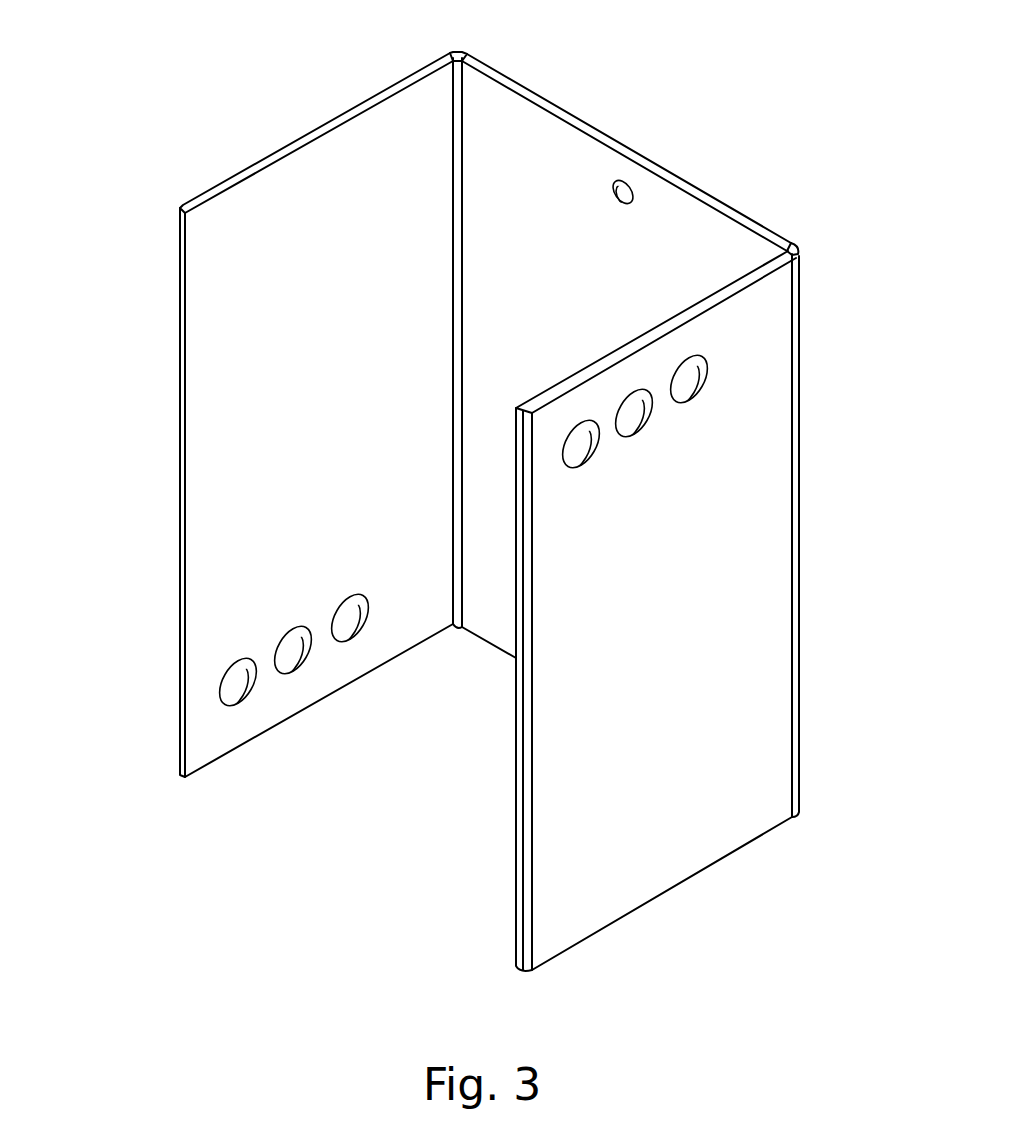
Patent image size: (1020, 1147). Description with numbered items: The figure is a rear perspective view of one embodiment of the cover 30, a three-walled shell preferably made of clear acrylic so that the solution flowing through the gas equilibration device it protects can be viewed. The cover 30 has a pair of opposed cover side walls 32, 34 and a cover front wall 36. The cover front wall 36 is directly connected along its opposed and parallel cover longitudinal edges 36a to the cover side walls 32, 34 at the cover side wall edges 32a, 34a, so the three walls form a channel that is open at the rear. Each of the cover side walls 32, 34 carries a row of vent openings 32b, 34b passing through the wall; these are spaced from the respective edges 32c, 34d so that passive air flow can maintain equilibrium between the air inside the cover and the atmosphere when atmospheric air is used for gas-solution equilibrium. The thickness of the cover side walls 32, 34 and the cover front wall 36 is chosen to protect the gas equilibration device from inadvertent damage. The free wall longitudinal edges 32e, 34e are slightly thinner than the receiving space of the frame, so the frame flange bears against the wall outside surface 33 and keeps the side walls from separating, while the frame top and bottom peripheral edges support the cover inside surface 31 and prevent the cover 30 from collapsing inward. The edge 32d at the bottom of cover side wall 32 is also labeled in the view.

The cover 30 is at (268, 156).
The cover inside surface 31 is at (590, 168).
The cover side wall 32 is at (652, 693).
The cover side wall edge 32a is at (800, 513).
The vent openings 32b is at (587, 457).
The edge of cover side wall 32c is at (587, 368).
The bottom edge of right side panel 32d is at (618, 920).
The wall longitudinal edge 32e is at (515, 838).
The wall outside surface 33 is at (754, 689).
The cover side wall 34 is at (264, 425).
The cover side wall edge 34a is at (452, 268).
The vent openings 34b is at (247, 702).
The edge of cover side wall 34d is at (200, 768).
The wall longitudinal edge 34e is at (178, 625).
The cover front wall 36 is at (575, 293).
The cover longitudinal edges 36a is at (458, 51).